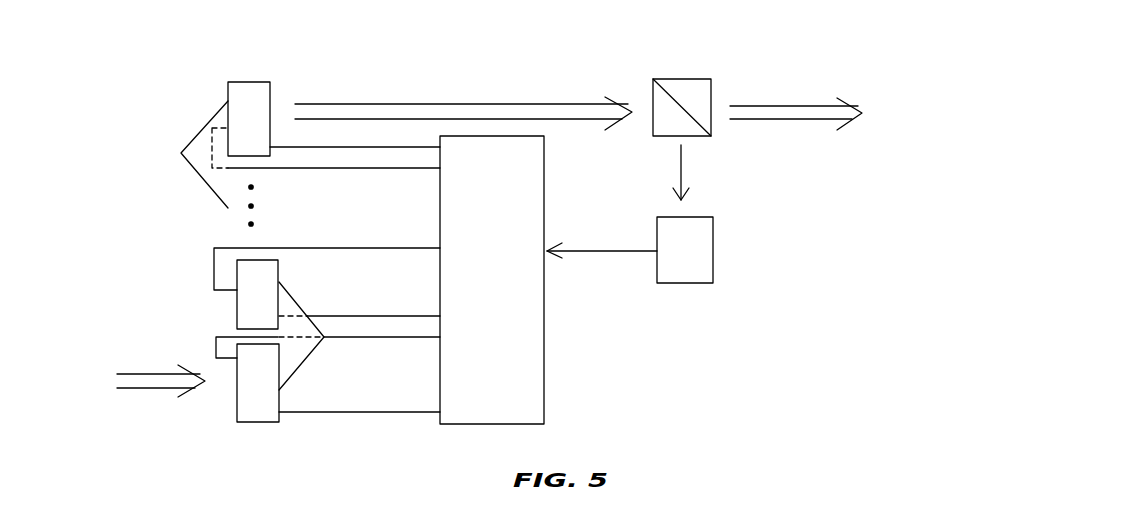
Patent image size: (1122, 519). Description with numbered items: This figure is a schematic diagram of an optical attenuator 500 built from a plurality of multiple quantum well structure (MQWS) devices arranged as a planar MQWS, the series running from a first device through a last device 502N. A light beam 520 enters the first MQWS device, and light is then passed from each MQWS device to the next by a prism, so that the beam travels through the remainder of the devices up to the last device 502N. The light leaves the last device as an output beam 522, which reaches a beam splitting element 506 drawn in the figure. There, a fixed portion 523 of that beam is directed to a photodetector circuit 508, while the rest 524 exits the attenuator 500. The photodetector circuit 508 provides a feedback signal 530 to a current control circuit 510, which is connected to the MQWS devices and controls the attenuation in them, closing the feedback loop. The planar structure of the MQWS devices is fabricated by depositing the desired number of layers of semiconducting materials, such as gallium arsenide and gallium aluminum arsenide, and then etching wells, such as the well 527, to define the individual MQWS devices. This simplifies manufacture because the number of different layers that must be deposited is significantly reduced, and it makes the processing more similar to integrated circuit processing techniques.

The attenuator 500 is at (829, 29).
The MQWS device 502N is at (257, 82).
The well 527 is at (279, 351).
The beam 522 is at (482, 104).
The beam splitter 506 is at (685, 79).
The exiting portion of beam 524 is at (814, 119).
The fixed portion of beam 523 is at (681, 163).
The photodetector circuit 508 is at (713, 262).
The feedback signal 530 is at (616, 251).
The current control circuit 510 is at (544, 375).
The light beam 520 is at (143, 390).